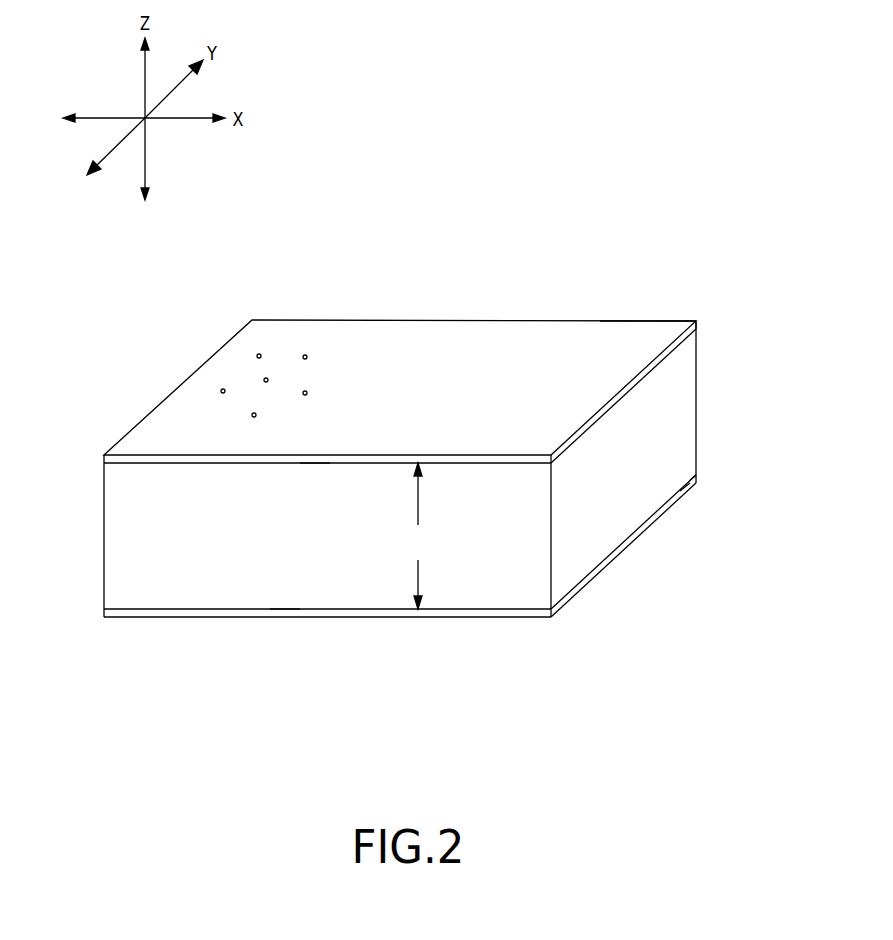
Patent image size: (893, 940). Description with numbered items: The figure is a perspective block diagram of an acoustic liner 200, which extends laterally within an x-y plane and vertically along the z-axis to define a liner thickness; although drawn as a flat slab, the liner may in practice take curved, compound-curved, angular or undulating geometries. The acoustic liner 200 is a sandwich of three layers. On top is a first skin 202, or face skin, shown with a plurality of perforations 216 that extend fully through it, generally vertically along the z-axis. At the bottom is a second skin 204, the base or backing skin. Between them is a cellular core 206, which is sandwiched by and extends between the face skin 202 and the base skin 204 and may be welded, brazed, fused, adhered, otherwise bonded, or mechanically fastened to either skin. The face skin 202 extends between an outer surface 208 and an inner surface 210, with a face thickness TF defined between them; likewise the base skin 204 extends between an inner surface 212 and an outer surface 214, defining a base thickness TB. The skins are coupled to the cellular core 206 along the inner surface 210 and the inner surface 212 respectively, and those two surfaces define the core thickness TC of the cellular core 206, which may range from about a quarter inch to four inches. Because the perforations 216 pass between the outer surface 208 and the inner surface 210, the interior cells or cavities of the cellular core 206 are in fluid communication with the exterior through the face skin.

The acoustic liner 200 is at (391, 455).
The first skin 202 is at (430, 366).
The second skin 204 is at (425, 558).
The cellular core 206 is at (105, 555).
The outer surface 208 is at (697, 322).
The inner surface 210 is at (699, 330).
The inner surface 212 is at (697, 478).
The outer surface 214 is at (688, 488).
The perforations 216 is at (318, 357).
The face thickness TF is at (310, 462).
The base thickness TB is at (283, 611).
The core thickness TC is at (417, 536).